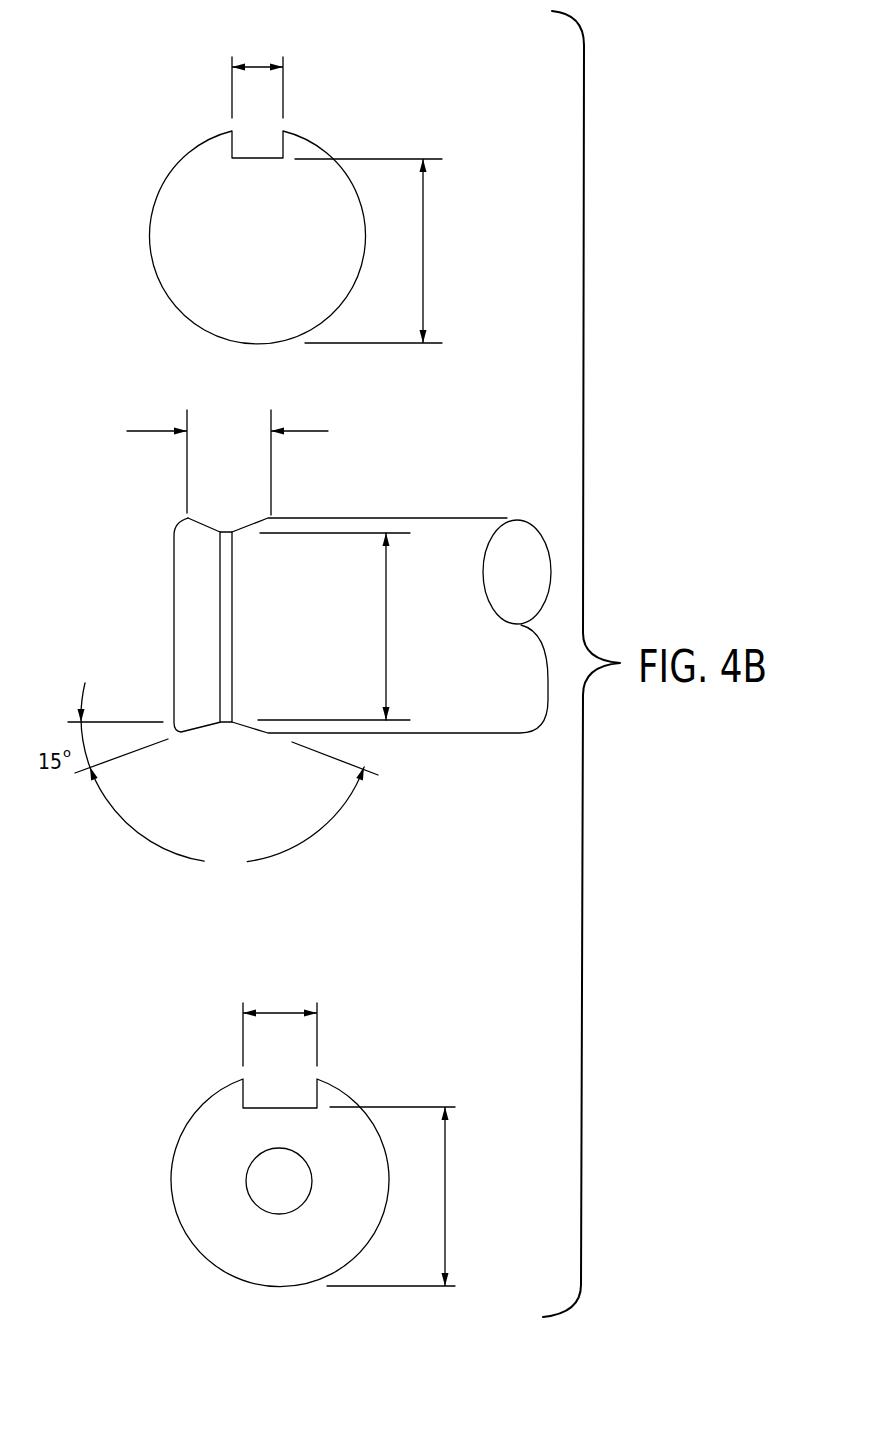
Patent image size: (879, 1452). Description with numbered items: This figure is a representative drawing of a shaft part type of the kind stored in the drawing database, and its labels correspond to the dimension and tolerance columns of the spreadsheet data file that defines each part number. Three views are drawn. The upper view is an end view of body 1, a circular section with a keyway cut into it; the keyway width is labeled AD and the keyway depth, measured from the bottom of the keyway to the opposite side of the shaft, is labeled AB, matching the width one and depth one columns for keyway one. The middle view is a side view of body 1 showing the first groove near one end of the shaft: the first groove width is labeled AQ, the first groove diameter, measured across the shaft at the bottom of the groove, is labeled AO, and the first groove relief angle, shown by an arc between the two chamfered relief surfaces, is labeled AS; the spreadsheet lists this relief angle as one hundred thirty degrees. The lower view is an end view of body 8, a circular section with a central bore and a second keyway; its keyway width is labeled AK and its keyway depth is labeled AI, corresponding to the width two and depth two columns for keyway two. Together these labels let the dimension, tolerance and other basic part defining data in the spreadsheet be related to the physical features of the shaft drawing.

The body 1 is at (325, 126).
The body 8 is at (185, 1108).
The width 1 AD is at (257, 76).
The depth 1 AB is at (374, 251).
The first groove width AQ is at (227, 462).
The first groove diameter AO is at (402, 626).
The first groove relief angle AS is at (226, 780).
The width 2 AK is at (280, 1026).
The depth 2 AI is at (401, 1196).